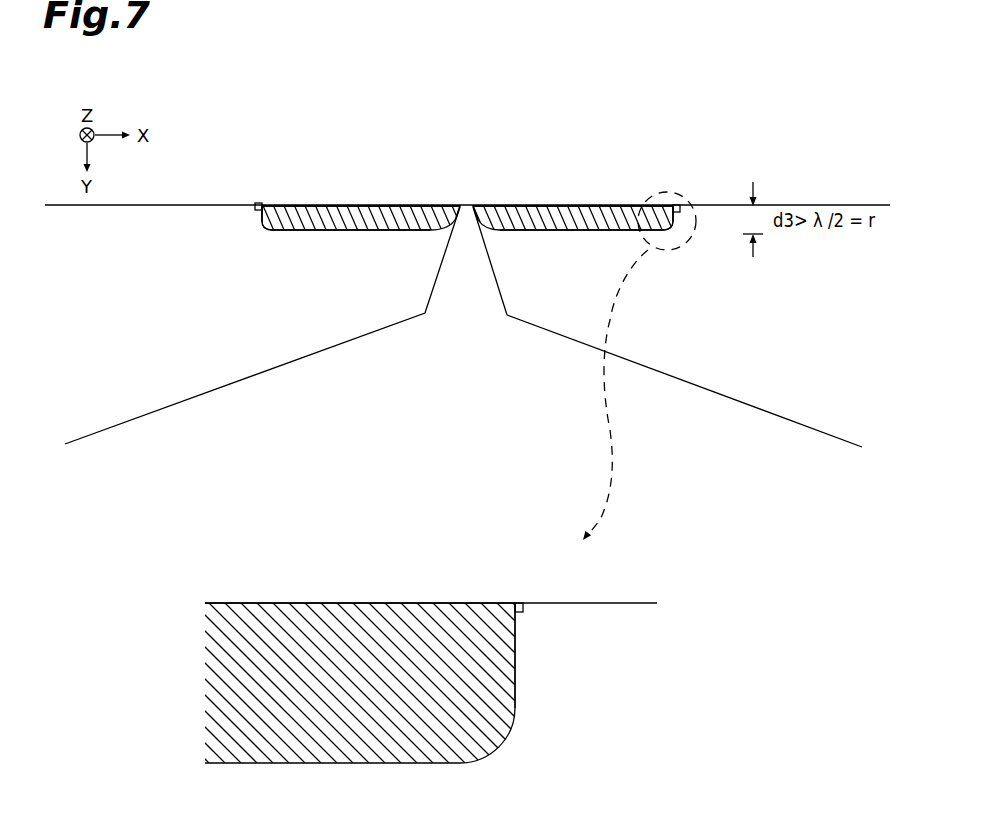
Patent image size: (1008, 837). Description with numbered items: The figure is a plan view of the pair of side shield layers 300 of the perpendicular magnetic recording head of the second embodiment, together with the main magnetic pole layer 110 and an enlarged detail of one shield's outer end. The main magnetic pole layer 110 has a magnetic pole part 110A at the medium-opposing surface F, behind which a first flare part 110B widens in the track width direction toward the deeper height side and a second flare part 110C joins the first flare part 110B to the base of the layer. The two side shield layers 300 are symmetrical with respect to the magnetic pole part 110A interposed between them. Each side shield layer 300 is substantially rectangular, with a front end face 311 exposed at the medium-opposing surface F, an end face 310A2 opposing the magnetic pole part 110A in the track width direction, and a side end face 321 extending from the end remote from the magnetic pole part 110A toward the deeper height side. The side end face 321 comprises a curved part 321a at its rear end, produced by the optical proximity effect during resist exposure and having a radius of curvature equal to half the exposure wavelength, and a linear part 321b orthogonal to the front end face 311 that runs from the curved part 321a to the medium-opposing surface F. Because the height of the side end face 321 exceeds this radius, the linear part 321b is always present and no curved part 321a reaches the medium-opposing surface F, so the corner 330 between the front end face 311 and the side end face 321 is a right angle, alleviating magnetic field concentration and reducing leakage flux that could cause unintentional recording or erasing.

The main magnetic pole layer 110 is at (463, 327).
The magnetic pole part 110A is at (466, 204).
The first flare part 110B is at (478, 300).
The second flare part 110C is at (683, 386).
The side shield layer 300 is at (317, 208).
The front end face 311 is at (363, 205).
The end face 310A2 is at (459, 204).
The side end face 321 is at (410, 506).
The curved part 321a is at (262, 229).
The linear part 321b is at (258, 213).
The corner 330 is at (259, 200).
The medium-opposing surface F is at (788, 205).